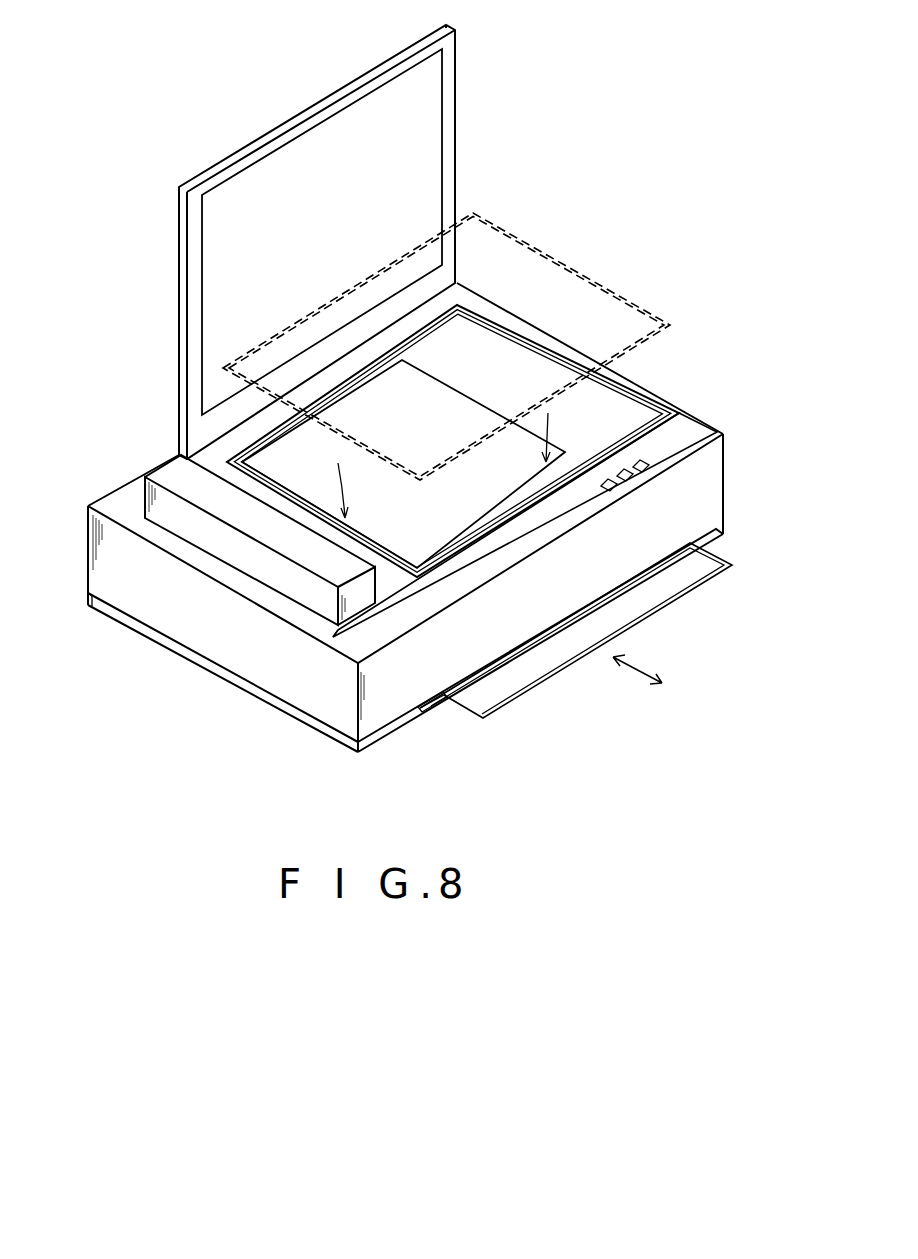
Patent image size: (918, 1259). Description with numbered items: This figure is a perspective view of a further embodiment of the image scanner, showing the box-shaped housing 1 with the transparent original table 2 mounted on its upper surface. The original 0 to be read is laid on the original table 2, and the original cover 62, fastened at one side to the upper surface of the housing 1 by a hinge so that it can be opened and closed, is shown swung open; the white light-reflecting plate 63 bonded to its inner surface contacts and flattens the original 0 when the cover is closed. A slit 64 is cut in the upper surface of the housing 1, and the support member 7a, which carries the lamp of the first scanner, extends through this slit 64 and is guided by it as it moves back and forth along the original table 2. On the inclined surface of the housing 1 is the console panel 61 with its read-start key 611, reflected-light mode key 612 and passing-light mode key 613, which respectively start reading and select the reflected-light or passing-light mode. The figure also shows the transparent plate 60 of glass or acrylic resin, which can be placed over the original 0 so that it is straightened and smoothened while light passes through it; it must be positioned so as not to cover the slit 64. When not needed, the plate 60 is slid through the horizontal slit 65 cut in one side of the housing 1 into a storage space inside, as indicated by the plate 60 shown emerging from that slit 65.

The housing 1 is at (100, 558).
The original table 2 is at (405, 575).
The support member 7a is at (170, 470).
The original 0 is at (557, 447).
The transparent plate 60 is at (617, 305).
The console panel 61 is at (688, 435).
The read-start key 611 is at (610, 495).
The reflected-light mode key 612 is at (628, 478).
The passing-light mode key 613 is at (645, 468).
The original cover 62 is at (455, 114).
The light-reflecting plate 63 is at (442, 172).
The slit 64 is at (457, 305).
The horizontal slit 65 is at (433, 708).